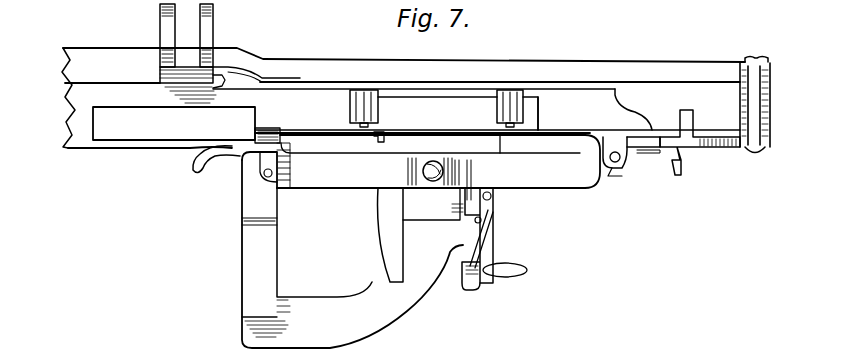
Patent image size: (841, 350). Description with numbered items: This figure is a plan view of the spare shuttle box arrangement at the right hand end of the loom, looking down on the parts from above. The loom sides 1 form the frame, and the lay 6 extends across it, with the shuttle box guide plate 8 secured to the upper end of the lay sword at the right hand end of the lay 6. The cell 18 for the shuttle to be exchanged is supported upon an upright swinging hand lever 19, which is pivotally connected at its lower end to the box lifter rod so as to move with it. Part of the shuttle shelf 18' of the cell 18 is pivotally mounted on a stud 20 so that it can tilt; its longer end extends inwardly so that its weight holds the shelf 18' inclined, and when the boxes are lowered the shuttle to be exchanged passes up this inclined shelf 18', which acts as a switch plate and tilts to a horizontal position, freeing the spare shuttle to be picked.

The loom sides 1 is at (255, 248).
The lay 6 is at (80, 112).
The shuttle box guide plate 8 is at (693, 148).
The cell for the shuttle to be exchanged 18 is at (595, 80).
The shuttle shelf 18' is at (416, 113).
The upright swinging hand lever 19 is at (428, 186).
The stud 20 is at (378, 137).